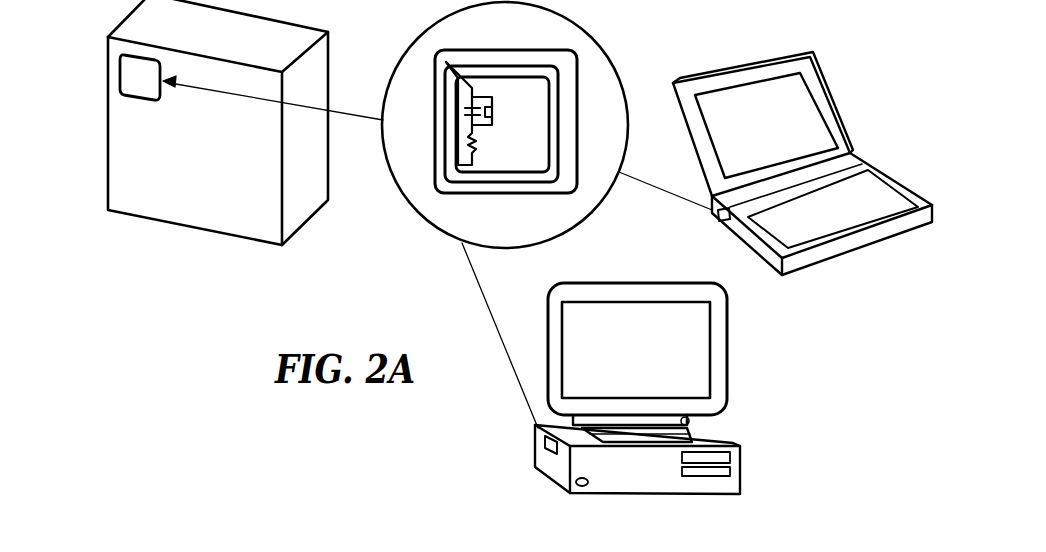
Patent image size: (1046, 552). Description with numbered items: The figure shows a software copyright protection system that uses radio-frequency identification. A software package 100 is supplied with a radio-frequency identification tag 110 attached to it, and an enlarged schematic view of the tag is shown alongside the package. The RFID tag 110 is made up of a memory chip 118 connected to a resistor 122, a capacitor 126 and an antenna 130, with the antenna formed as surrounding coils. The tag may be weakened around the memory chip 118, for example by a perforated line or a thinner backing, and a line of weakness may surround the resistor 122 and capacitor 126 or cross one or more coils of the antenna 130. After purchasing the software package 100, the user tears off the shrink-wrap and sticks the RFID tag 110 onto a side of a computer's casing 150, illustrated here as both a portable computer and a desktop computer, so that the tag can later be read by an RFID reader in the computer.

The software package 100 is at (196, 218).
The radio-frequency identification (RFID) tag 110 is at (125, 72).
The memory chip 118 is at (494, 111).
The resistor 122 is at (477, 141).
The capacitor 126 is at (470, 110).
The antenna 130 is at (488, 67).
The computer's casing 150 is at (862, 240).